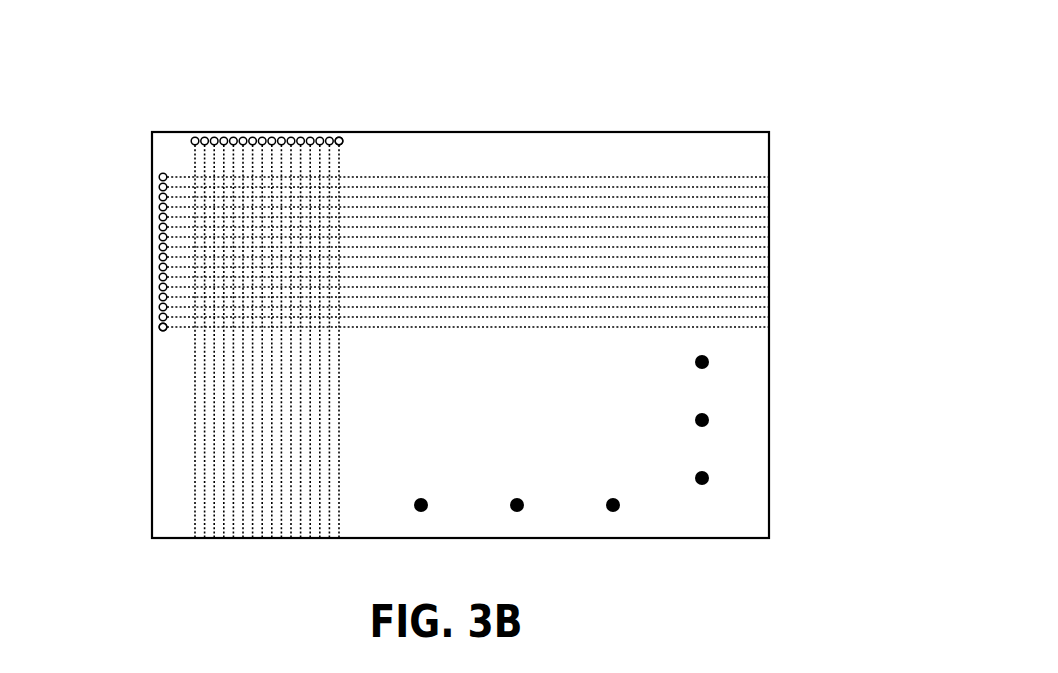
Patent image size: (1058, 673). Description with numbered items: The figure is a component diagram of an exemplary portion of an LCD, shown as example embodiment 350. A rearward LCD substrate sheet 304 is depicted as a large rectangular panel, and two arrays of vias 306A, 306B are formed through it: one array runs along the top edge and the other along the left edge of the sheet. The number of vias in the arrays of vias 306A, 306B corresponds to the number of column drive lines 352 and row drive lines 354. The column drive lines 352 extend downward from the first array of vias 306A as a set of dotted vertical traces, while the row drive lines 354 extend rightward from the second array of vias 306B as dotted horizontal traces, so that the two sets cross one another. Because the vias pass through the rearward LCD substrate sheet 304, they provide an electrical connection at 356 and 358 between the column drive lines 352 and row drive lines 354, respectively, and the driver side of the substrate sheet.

The example embodiment 350 is at (152, 50).
The rearward LCD substrate sheet 304 is at (484, 131).
The array of vias 306A is at (338, 122).
The array of vias 306B is at (142, 173).
The column drive lines 352 is at (194, 545).
The row drive lines 354 is at (780, 177).
The electrical connection 356 is at (352, 140).
The electrical connection 358 is at (163, 346).